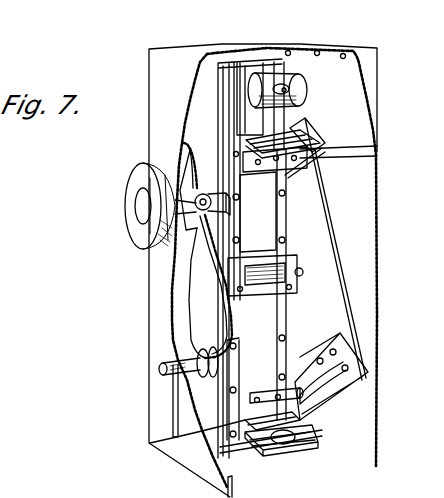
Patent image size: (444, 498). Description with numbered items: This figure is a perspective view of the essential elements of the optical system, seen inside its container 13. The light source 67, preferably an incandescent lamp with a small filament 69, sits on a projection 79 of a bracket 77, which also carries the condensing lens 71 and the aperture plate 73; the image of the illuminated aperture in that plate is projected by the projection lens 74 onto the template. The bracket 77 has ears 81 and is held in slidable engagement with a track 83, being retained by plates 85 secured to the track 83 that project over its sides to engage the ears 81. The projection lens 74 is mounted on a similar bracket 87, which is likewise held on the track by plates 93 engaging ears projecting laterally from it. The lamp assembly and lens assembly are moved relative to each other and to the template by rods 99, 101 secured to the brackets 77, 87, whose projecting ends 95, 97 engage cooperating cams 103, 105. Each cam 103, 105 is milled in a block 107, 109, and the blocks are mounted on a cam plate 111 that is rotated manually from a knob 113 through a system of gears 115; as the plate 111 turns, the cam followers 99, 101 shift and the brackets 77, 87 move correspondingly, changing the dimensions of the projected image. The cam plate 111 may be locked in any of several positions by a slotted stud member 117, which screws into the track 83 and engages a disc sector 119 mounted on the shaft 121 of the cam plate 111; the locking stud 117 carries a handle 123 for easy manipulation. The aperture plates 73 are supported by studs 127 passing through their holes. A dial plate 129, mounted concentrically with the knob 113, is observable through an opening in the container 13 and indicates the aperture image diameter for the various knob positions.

The container 13 is at (277, 44).
The light source 67 is at (310, 98).
The filament 69 is at (287, 88).
The condensing lens 71 is at (312, 135).
The aperture plate 73 is at (322, 145).
The projection lens 74 is at (306, 450).
The bracket 77 is at (255, 150).
The projection 79 is at (258, 122).
The ears 81 is at (247, 130).
The track 83 is at (222, 62).
The plates 85 is at (281, 220).
The bracket 87 is at (268, 432).
The plates 93 is at (237, 370).
The projecting end 95 is at (336, 152).
The projecting end 97 is at (287, 392).
The rod 99 is at (243, 153).
The rod 101 is at (150, 443).
The cam 103 is at (320, 161).
The cam 105 is at (337, 364).
The block 107 is at (302, 174).
The block 109 is at (323, 400).
The cam plate 111 is at (336, 296).
The knob 113 is at (137, 233).
The gears 115 is at (213, 214).
The slotted stud member 117 is at (168, 354).
The disc sector 119 is at (207, 325).
The shaft 121 is at (274, 263).
The handle 123 is at (172, 403).
The studs 127 is at (247, 150).
The plate 129 is at (181, 152).